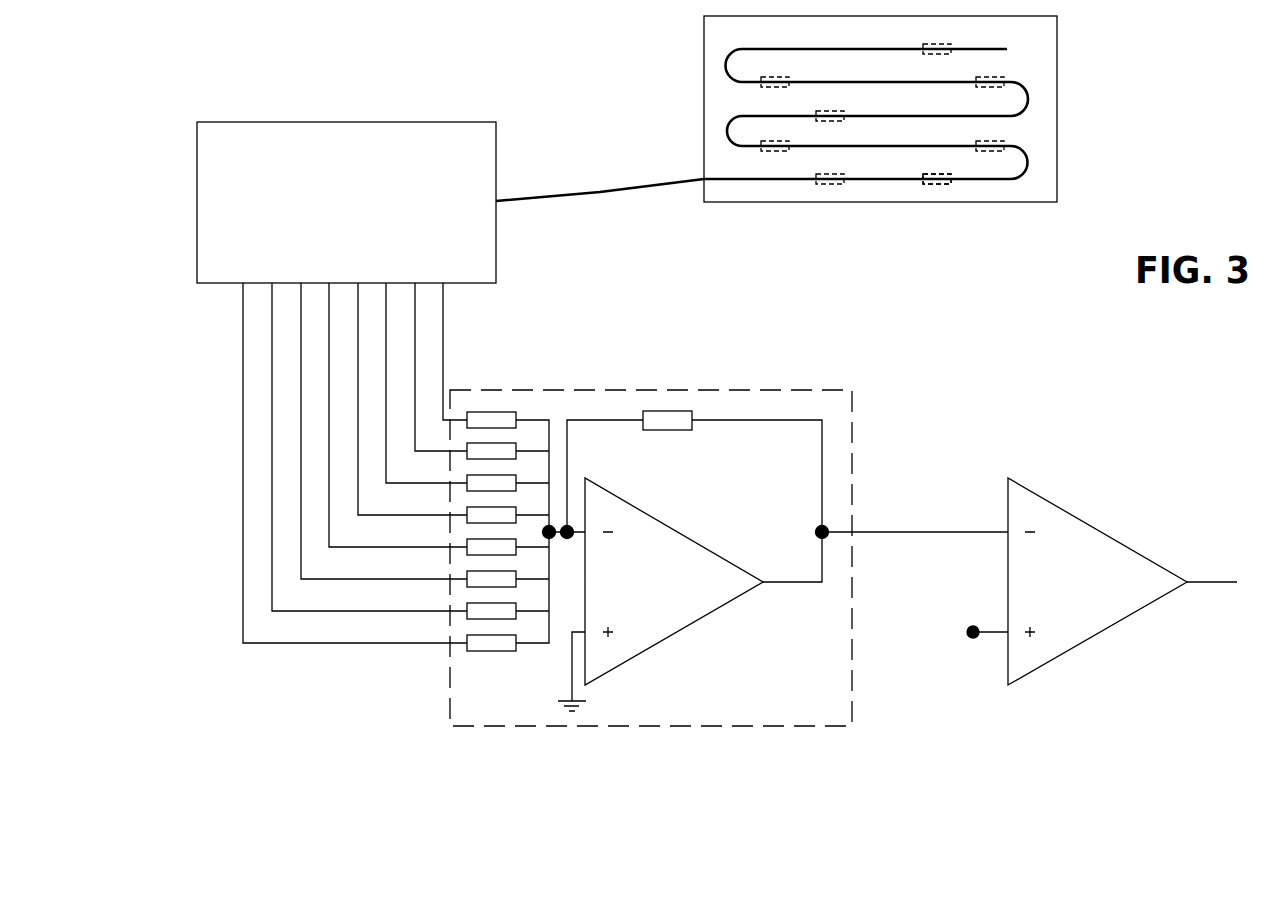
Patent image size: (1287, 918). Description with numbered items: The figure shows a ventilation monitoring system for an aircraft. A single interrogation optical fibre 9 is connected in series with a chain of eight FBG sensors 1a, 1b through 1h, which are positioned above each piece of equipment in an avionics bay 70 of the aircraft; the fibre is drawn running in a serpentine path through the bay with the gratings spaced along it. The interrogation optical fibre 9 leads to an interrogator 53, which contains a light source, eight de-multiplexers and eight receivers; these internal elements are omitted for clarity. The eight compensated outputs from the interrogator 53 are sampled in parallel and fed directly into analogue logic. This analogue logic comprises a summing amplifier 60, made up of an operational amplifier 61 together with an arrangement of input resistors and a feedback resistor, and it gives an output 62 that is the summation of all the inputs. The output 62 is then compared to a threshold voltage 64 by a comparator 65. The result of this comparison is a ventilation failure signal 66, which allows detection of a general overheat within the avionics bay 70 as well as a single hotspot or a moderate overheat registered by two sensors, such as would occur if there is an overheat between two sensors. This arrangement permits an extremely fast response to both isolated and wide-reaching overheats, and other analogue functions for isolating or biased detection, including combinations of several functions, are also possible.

The interrogator 53 is at (197, 252).
The interrogation optical fibre 9 is at (627, 190).
The avionics bay 70 is at (703, 142).
The FBG sensor 1h is at (943, 45).
The FBG sensor 1a is at (835, 187).
The FBG sensor 1b is at (941, 187).
The summing amplifier 60 is at (710, 390).
The operational amplifier 61 is at (649, 593).
The output 62 is at (923, 530).
The threshold voltage 64 is at (972, 626).
The comparator 65 is at (1070, 593).
The ventilation failure signal 66 is at (1218, 580).